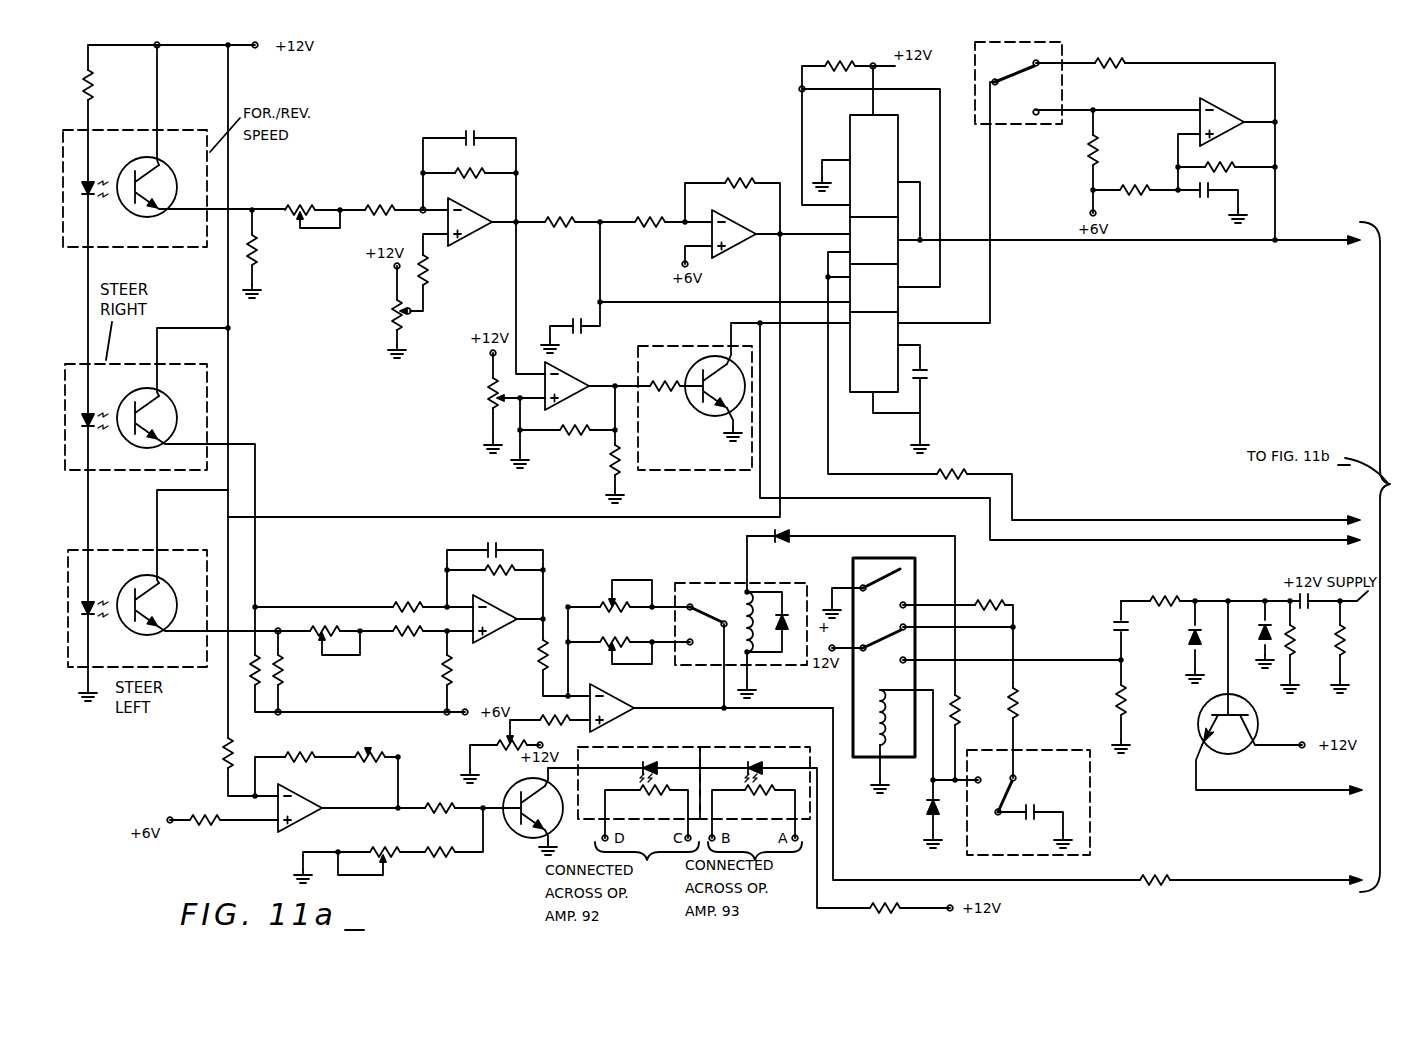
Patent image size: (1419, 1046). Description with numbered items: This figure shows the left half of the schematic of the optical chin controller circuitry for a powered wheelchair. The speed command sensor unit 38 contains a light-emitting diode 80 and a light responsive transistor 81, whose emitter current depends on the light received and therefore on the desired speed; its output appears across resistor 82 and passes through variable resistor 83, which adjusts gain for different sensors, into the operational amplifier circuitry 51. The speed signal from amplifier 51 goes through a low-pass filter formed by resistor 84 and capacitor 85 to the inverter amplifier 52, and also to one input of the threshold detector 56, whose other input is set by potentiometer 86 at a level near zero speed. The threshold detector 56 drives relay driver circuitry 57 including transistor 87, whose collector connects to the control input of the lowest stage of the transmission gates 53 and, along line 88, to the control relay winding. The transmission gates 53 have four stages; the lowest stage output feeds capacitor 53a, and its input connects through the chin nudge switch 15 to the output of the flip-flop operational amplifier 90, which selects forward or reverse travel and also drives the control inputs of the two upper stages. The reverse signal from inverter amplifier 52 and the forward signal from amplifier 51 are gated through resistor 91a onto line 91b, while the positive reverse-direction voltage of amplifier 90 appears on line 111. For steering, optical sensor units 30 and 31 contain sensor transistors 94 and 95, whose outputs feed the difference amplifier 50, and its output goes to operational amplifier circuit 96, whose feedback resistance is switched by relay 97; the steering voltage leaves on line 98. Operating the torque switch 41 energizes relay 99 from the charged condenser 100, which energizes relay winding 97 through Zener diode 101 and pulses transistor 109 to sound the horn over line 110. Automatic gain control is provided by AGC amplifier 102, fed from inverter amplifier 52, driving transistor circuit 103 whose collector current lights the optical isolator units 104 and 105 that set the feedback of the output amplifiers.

The speed command sensor unit 38 is at (165, 130).
The light-emitting diode 80 is at (92, 180).
The light responsive transistor 81 is at (170, 180).
The resistor 82 is at (262, 255).
The variable resistor 83 is at (302, 209).
The optical sensor unit 30 is at (80, 362).
The sensor transistor 94 is at (170, 402).
The optical sensor unit 31 is at (80, 553).
The sensor transistor 95 is at (145, 578).
The operational amplifier circuitry 51 is at (375, 308).
The resistor 84 is at (556, 226).
The capacitor 85 is at (577, 320).
The potentiometer 86 is at (471, 399).
The threshold detector 56 is at (566, 454).
The relay driver circuitry 57 is at (655, 348).
The transistor 87 is at (705, 412).
The inverter amplifier 52 is at (725, 166).
The transmission gates 53 is at (861, 409).
The capacitor 53a is at (976, 372).
The chin nudge switch 15 is at (1012, 43).
The operational amplifier 90 is at (1215, 110).
The line 111 is at (1292, 240).
The resistor 91a is at (1025, 458).
The line 91b is at (1325, 511).
The line 88 is at (1336, 541).
The Zener diode 101 is at (792, 534).
The operational amplifier circuit 96 is at (663, 581).
The relay 97 is at (768, 585).
The relay 99 is at (853, 703).
The torque switch 41 is at (1026, 750).
The condenser 100 is at (1024, 816).
The difference amplifier 50 is at (489, 652).
The optical isolator unit 104 is at (616, 748).
The optical isolator unit 105 is at (718, 748).
The AGC amplifier 102 is at (266, 839).
The transistor circuit 103 is at (509, 844).
The transistor 109 is at (1255, 750).
The line 110 is at (1340, 792).
The line 98 is at (1292, 880).